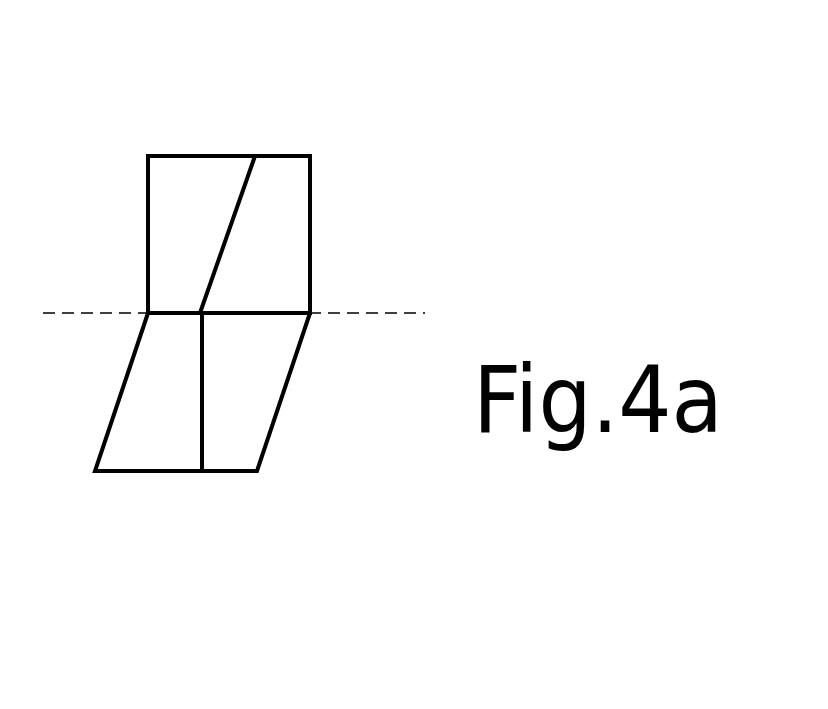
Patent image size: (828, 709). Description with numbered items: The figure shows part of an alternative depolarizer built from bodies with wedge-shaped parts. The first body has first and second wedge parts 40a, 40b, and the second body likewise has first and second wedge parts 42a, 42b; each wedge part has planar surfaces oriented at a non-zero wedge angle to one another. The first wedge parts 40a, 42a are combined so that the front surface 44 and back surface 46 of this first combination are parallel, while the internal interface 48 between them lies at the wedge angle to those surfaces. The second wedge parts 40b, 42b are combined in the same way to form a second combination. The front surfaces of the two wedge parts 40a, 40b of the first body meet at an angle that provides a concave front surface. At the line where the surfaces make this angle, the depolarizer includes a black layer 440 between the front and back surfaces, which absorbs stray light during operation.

The first wedge part of first body 40a is at (197, 192).
The first wedge part of second body 42a is at (282, 190).
The internal interface 48 is at (228, 208).
The front surface 44 is at (148, 233).
The back surface 46 is at (310, 233).
The black layer 440 is at (252, 314).
The second wedge part of first body 40b is at (148, 443).
The second wedge part of second body 42b is at (228, 430).